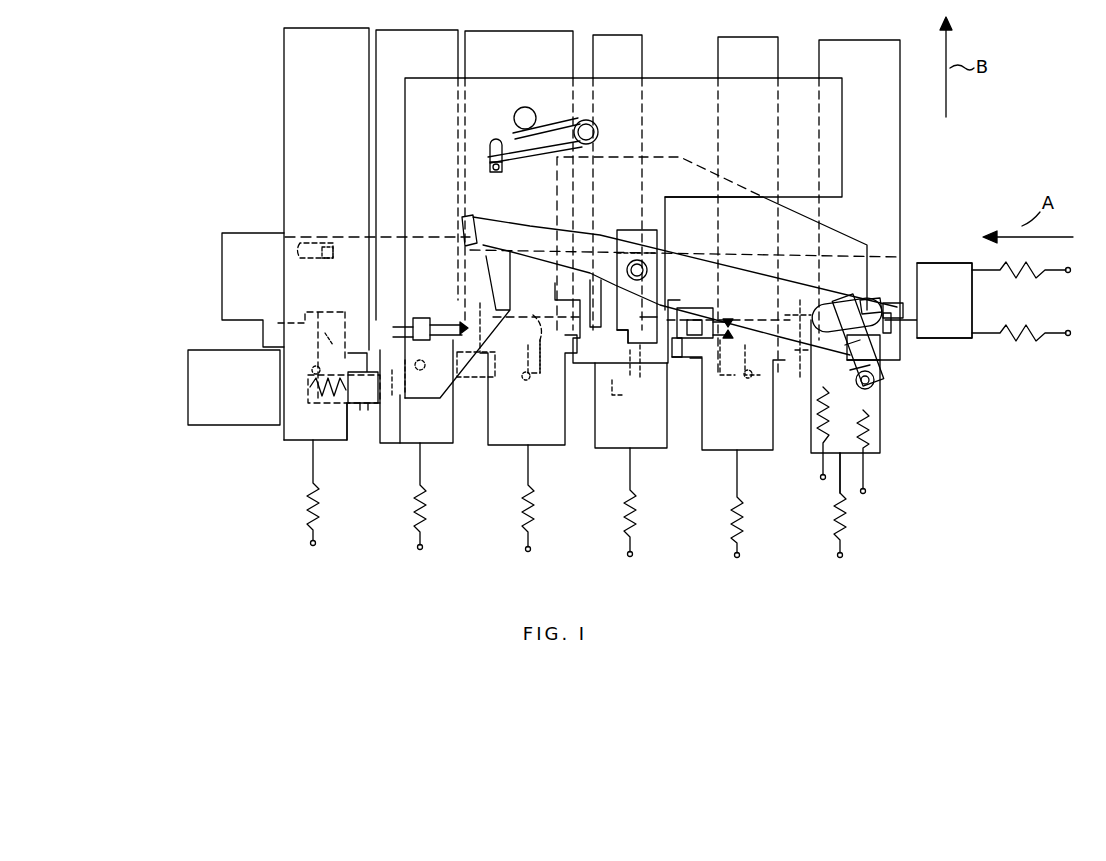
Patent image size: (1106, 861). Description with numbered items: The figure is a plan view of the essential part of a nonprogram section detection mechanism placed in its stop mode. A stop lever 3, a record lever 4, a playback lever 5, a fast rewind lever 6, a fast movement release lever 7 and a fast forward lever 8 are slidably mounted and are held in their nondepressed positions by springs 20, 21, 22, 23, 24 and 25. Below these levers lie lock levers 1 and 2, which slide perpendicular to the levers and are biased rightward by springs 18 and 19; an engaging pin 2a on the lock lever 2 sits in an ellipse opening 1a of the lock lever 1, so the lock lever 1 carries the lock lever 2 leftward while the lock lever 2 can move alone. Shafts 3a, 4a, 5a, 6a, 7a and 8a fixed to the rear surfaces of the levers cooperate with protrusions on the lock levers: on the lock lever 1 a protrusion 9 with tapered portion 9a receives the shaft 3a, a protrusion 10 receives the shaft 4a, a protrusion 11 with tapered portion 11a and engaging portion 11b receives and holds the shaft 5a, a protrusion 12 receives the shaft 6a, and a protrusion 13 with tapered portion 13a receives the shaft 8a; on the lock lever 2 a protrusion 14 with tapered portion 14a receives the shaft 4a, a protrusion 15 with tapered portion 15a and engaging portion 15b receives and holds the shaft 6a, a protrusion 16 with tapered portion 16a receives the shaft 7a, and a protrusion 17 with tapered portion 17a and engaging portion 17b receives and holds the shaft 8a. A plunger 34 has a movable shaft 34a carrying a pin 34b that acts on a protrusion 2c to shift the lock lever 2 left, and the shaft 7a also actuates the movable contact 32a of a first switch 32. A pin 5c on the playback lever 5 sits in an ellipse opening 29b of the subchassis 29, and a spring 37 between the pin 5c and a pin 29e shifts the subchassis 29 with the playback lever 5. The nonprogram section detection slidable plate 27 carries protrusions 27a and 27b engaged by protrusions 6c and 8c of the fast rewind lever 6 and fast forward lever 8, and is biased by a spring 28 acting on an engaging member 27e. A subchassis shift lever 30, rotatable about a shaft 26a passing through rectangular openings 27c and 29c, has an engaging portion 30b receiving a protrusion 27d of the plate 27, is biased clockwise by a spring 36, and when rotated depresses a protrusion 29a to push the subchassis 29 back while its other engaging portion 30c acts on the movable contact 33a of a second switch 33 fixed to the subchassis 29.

The lock lever 1 is at (972, 338).
The lock lever 2 is at (944, 300).
The ellipse opening 1a is at (300, 243).
The engaging pin 2a is at (334, 247).
The protrusion 2c is at (352, 353).
The stop lever 3 is at (328, 441).
The shaft 3a is at (305, 372).
The record lever 4 is at (453, 440).
The shaft 4a is at (420, 405).
The playback lever 5 is at (565, 436).
The shaft 5a is at (522, 380).
The pin 5c is at (503, 170).
The fast rewind lever 6 is at (654, 448).
The shaft 6a is at (623, 398).
The protrusion 6c is at (674, 362).
The fast movement release lever 7 is at (757, 450).
The shaft 7a is at (745, 378).
The fast forward lever 8 is at (880, 452).
The shaft 8a is at (829, 393).
The protrusion 8c is at (800, 355).
The protrusion 9 is at (328, 312).
The tapered portion 9a is at (325, 336).
The protrusion 10 is at (393, 372).
The protrusion 11 is at (518, 375).
The tapered portion 11a is at (529, 380).
The engaging portion 11b is at (540, 335).
The protrusion 12 is at (617, 345).
The protrusion 13 is at (882, 338).
The tapered portion 13a is at (874, 385).
The protrusion 14 is at (410, 400).
The tapered portion 14a is at (421, 371).
The protrusion 15 is at (630, 378).
The tapered portion 15a is at (640, 382).
The engaging portion 15b is at (648, 345).
The protrusion 16 is at (722, 378).
The tapered portion 16a is at (745, 380).
The protrusion 17 is at (845, 385).
The tapered portion 17a is at (875, 368).
The engaging portion 17b is at (870, 348).
The spring 18 is at (1042, 272).
The spring 19 is at (1042, 335).
The spring 20 is at (305, 508).
The spring 21 is at (426, 492).
The spring 22 is at (522, 515).
The spring 23 is at (624, 533).
The spring 24 is at (730, 505).
The spring 25 is at (834, 512).
The shaft 26a is at (652, 230).
The nonprogram section detection slidable plate 27 is at (614, 158).
The protrusion 27a is at (677, 357).
The protrusion 27b is at (818, 303).
The rectangular opening 27c is at (628, 230).
The protrusion 27d is at (890, 320).
The engaging member 27e is at (872, 300).
The spring 28 is at (822, 450).
The subchassis 29 is at (676, 78).
The protrusion 29a is at (594, 330).
The ellipse opening 29b is at (491, 140).
The rectangular opening 29c is at (640, 255).
The pin 29e is at (530, 107).
The subchassis shift lever 30 is at (793, 285).
The engaging portion 30b is at (893, 303).
The engaging portion 30c is at (472, 216).
The first switch 32 is at (695, 308).
The movable contact 32a is at (732, 320).
The second switch 33 is at (408, 326).
The movable contact 33a is at (452, 322).
The plunger 34 is at (210, 420).
The movable shaft 34a is at (375, 440).
The pin 34b is at (360, 410).
The spring 36 is at (870, 420).
The spring 37 is at (596, 124).